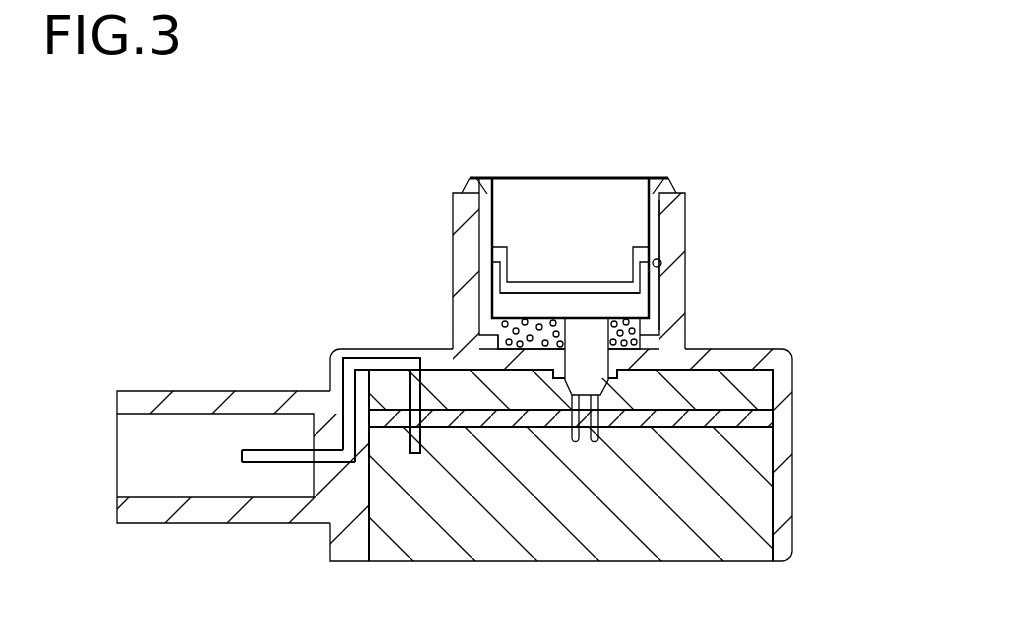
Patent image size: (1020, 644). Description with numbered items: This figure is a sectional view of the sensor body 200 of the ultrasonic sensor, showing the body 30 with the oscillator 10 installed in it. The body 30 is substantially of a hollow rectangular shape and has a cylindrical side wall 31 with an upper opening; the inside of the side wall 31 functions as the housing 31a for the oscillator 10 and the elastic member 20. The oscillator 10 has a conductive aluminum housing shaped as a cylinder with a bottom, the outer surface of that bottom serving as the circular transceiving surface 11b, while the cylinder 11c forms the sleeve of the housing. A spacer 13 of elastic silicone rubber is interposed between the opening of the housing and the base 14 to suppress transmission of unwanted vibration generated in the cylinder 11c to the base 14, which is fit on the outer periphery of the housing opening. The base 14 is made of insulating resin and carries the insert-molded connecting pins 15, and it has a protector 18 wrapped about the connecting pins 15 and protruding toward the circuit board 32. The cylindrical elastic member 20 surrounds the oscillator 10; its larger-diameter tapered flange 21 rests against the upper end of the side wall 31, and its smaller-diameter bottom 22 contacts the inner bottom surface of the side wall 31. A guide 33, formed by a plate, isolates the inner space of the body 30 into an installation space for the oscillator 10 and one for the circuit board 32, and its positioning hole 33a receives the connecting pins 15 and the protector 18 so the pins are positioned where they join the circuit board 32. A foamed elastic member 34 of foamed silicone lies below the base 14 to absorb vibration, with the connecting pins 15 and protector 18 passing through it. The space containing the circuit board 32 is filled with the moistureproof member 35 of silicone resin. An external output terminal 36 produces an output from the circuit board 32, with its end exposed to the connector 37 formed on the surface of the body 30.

The oscillator 10 is at (672, 127).
The transceiving surface 11b is at (513, 177).
The cylinder 11c is at (487, 200).
The spacer 13 is at (495, 255).
The base 14 is at (497, 305).
The connecting pins 15 is at (573, 440).
The protector 18 is at (622, 348).
The elastic member 20 is at (651, 200).
The flange 21 is at (463, 190).
The bottom 22 is at (498, 332).
The body 30 is at (818, 327).
The side wall 31 is at (670, 229).
The housing 31a is at (663, 264).
The circuit board 32 is at (697, 420).
The guide 33 is at (500, 362).
The positioning hole 33a is at (597, 353).
The foamed elastic member 34 is at (670, 331).
The moistureproof member 35 is at (688, 550).
The external output terminal 36 is at (255, 450).
The connector 37 is at (176, 391).
The sensor body 200 is at (827, 162).